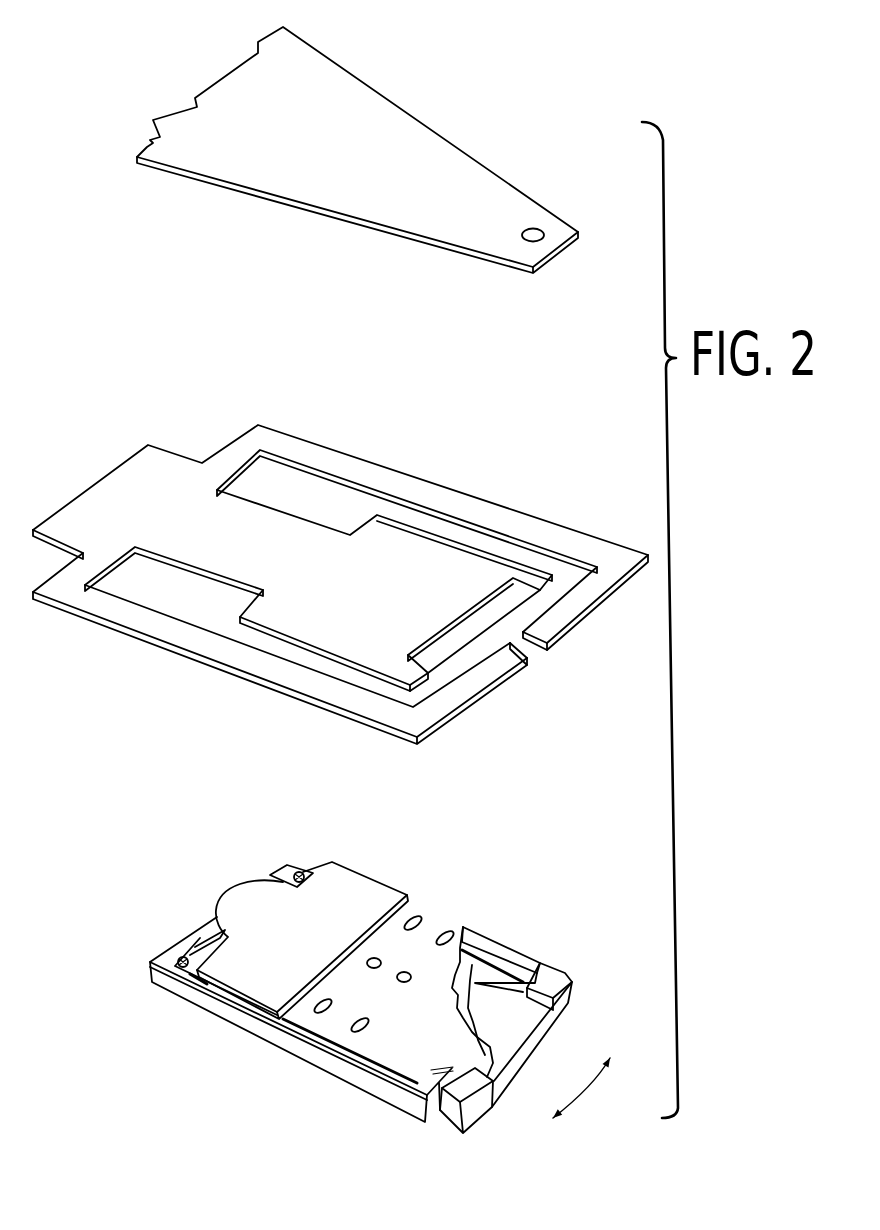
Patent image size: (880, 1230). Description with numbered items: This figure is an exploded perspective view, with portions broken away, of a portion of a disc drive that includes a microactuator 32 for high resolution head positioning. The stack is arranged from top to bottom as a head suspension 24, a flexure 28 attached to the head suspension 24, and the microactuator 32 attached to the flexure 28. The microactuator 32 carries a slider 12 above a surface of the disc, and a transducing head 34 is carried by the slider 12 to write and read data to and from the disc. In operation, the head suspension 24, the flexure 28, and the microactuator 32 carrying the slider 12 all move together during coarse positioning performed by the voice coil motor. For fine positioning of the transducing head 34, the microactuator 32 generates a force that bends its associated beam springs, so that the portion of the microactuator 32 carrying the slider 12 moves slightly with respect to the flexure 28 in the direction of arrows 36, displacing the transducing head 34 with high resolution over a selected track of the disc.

The slider 12 is at (527, 1015).
The head suspension 24 is at (430, 142).
The flexure 28 is at (437, 480).
The microactuator 32 is at (173, 940).
The transducing head 34 is at (520, 1053).
The arrows 36 is at (589, 1090).